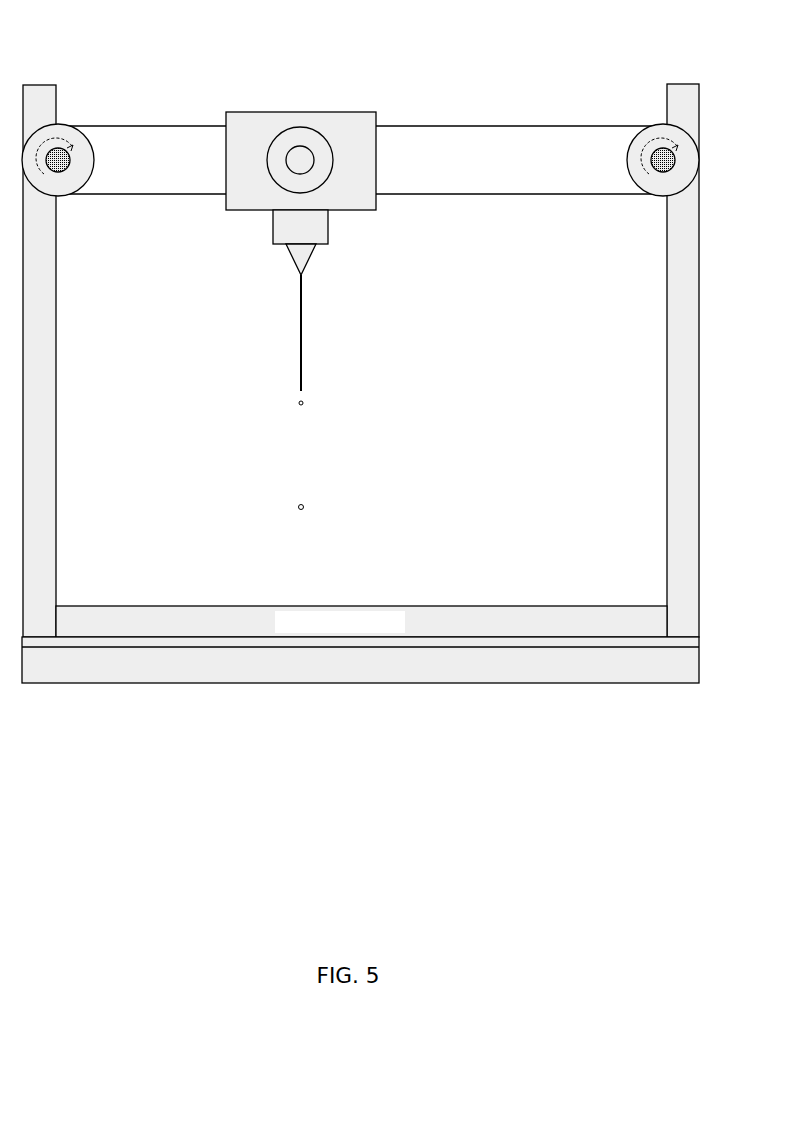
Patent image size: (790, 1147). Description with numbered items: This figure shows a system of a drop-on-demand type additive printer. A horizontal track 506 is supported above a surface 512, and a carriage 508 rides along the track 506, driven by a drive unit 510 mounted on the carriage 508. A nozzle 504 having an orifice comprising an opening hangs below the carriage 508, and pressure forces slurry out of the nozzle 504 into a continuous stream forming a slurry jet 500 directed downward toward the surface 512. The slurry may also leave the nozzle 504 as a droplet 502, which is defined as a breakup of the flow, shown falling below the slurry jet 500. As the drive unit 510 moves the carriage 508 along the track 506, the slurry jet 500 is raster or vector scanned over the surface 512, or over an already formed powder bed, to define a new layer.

The slurry jet 500 is at (305, 316).
The droplet 502 is at (305, 506).
The nozzle 504 is at (298, 273).
The track 506 is at (527, 127).
The carriage 508 is at (345, 112).
The drive unit 510 is at (300, 125).
The surface 512 is at (360, 644).